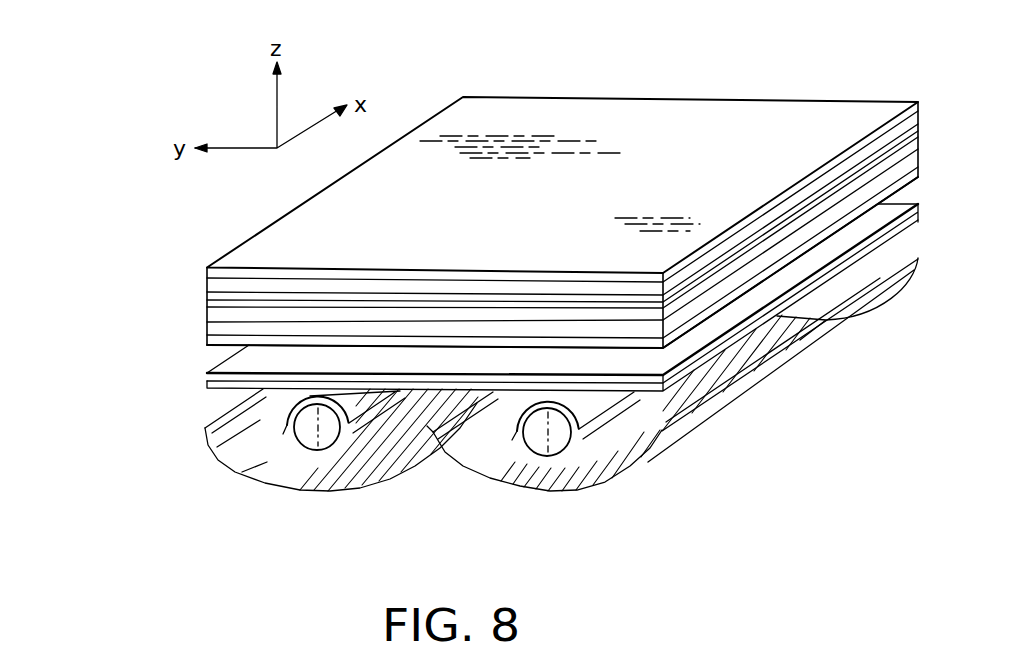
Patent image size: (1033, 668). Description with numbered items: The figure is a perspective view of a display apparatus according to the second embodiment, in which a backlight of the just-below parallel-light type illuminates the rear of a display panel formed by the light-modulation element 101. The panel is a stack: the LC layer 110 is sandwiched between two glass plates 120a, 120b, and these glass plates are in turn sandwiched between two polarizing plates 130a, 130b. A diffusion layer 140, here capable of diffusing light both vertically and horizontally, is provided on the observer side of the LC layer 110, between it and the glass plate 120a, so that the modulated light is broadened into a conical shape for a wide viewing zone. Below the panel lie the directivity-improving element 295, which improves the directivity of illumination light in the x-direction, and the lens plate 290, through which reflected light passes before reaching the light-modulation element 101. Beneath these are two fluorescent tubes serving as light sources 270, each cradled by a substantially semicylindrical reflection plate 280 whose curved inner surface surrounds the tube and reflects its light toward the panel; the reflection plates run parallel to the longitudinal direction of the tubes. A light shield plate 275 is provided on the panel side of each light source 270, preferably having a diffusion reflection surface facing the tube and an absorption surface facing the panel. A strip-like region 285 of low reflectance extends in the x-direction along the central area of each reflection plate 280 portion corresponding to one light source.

The light-modulation element 101 is at (88, 171).
The polarizing plate 130a is at (207, 278).
The glass plate 120a is at (207, 287).
The diffusion layer 140 is at (207, 298).
The LC layer 110 is at (207, 305).
The glass plate 120b is at (207, 322).
The polarizing plate 130b is at (207, 333).
The directivity-improving element 295 is at (207, 373).
The lens plate 290 is at (207, 385).
The reflection plate 280 is at (228, 467).
The light source 270 is at (295, 447).
The strip-like region 285 is at (353, 473).
The light shield plate 275 is at (363, 400).